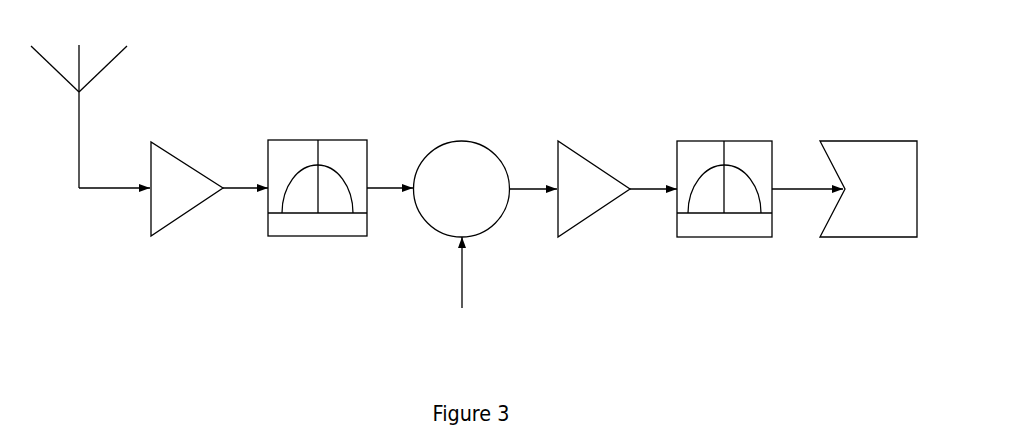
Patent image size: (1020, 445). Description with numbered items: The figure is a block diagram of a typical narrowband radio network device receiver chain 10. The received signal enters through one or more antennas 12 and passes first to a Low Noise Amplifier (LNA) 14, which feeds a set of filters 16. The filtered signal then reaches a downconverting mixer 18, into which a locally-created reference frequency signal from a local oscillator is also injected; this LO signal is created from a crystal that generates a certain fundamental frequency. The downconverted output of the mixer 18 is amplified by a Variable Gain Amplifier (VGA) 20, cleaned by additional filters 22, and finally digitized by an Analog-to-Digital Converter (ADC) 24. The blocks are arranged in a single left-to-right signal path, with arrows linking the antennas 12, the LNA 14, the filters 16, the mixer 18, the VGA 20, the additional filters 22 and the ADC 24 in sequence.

The receiver chain 10 is at (552, 90).
The antenna 12 is at (142, 63).
The Low Noise Amplifier (LNA) 14 is at (187, 236).
The filters 16 is at (319, 245).
The downconverting mixer 18 is at (512, 235).
The Variable Gain Amplifier (VGA) 20 is at (615, 223).
The additional filters 22 is at (735, 248).
The Analog-to-Digital Converter (ADC) 24 is at (877, 248).